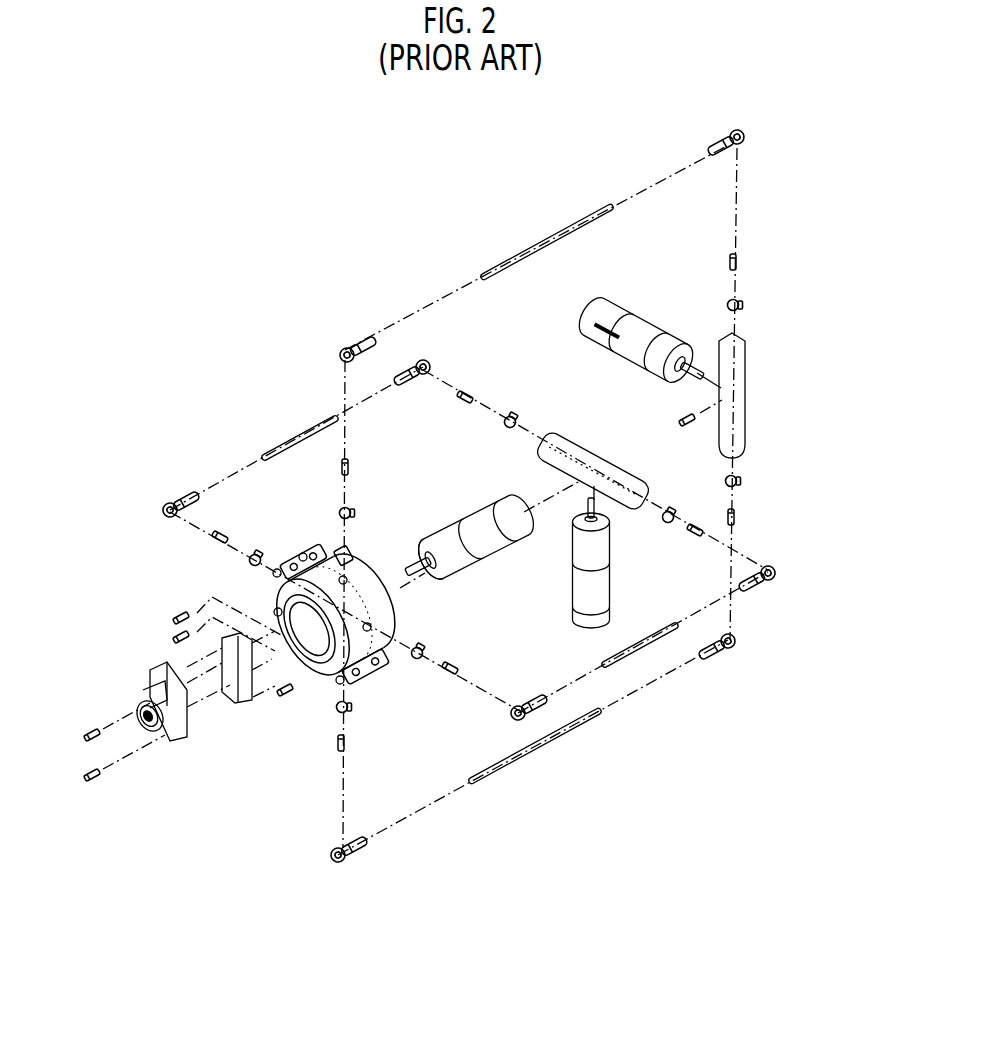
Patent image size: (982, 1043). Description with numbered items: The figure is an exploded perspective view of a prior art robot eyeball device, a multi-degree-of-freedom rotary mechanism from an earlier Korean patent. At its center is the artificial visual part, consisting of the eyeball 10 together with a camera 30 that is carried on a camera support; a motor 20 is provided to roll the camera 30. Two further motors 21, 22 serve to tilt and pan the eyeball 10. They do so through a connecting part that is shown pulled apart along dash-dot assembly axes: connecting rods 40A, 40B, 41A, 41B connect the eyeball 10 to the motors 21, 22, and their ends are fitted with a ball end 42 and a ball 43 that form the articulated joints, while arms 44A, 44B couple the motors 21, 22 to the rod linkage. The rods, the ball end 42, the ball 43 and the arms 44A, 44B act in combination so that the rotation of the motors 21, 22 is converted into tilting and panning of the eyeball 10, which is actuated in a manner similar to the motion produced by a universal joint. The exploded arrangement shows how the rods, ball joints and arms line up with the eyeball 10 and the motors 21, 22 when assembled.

The eyeball 10 is at (318, 546).
The motor 20 is at (478, 510).
The motor 21 is at (572, 549).
The motor 22 is at (586, 322).
The camera 30 is at (147, 685).
The connecting rod 40A is at (302, 437).
The connecting rod 40B is at (665, 622).
The connecting rod 41A is at (547, 243).
The connecting rod 41B is at (540, 745).
The ball end 42 is at (741, 143).
The ball 43 is at (510, 418).
The arm 44A is at (577, 447).
The arm 44B is at (746, 396).